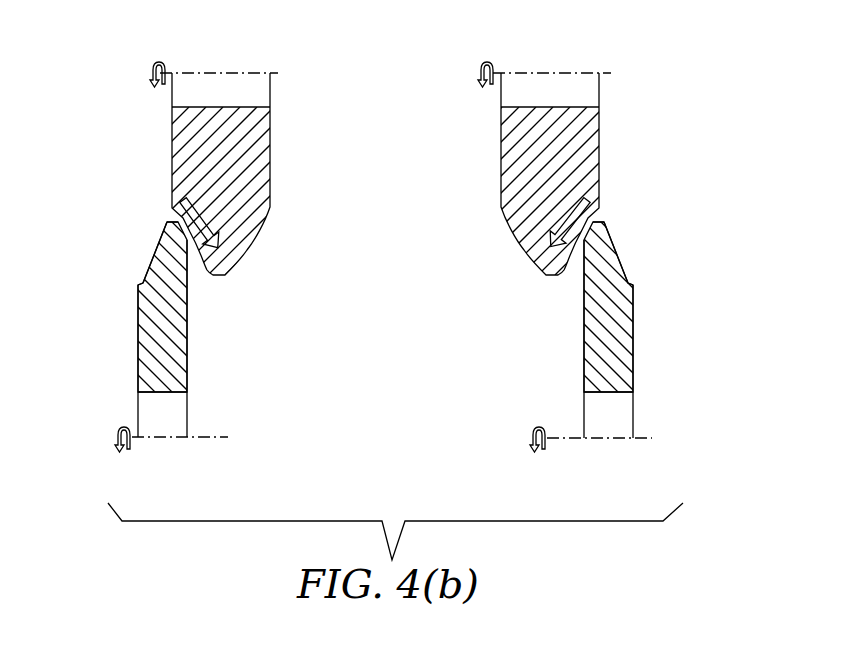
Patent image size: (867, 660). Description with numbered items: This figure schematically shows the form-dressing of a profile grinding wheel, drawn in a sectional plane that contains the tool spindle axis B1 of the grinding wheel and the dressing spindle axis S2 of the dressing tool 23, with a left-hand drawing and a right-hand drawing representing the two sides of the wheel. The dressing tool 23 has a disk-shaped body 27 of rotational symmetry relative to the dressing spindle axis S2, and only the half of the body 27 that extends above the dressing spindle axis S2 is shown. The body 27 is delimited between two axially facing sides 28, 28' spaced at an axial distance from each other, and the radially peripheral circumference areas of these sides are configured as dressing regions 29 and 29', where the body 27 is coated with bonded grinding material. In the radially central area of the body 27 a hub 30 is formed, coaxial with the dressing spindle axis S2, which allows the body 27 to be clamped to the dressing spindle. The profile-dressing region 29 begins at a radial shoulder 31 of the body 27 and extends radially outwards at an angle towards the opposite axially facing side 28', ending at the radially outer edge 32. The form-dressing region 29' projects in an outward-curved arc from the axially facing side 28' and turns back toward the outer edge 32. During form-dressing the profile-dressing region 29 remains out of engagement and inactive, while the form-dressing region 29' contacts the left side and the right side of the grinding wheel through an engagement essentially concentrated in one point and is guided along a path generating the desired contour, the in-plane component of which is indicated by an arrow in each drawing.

The tool spindle axis B1 is at (233, 72).
The radially outer edge 32 is at (170, 220).
The form-dressing region 29' is at (379, 225).
The profile-dressing region 29 is at (389, 252).
The radial shoulder 31 is at (143, 282).
The dressing tool 23 is at (124, 325).
The axially facing side 28 is at (381, 347).
The axially facing side 28' is at (386, 320).
The disk-shaped body 27 is at (168, 378).
The hub 30 is at (163, 392).
The dressing spindle axis S2 is at (218, 440).